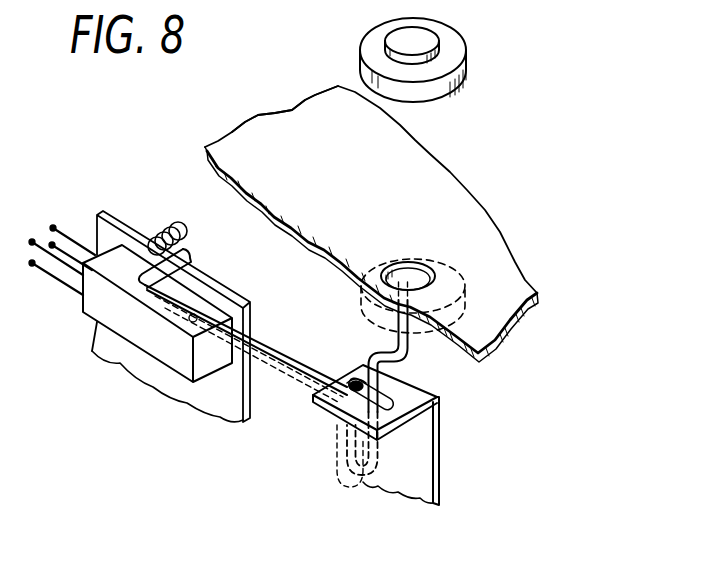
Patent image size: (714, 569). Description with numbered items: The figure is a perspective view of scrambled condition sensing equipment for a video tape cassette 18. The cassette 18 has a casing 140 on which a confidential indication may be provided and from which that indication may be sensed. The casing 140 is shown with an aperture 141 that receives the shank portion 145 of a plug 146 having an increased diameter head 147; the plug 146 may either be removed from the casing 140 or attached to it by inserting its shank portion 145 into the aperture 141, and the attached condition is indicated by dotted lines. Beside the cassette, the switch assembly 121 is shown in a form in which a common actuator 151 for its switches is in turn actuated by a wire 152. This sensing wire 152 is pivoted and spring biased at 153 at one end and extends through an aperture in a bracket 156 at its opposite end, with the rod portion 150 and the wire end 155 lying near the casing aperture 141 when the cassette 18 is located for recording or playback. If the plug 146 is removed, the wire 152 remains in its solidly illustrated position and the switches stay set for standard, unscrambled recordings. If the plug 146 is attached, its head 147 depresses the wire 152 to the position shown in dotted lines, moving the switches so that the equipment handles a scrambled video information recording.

The video tape cassette 18 is at (524, 263).
The casing 140 is at (232, 145).
The aperture 141 is at (430, 257).
The shank portion 145 is at (427, 37).
The plug 146 is at (360, 39).
The head 147 is at (443, 88).
The rod 150 is at (405, 350).
The common actuator 151 is at (203, 310).
The wire 152 is at (270, 340).
The pivot and spring bias 153 is at (162, 224).
The hook end 155 is at (353, 375).
The bracket 156 is at (440, 465).
The switch assembly 121 is at (153, 340).